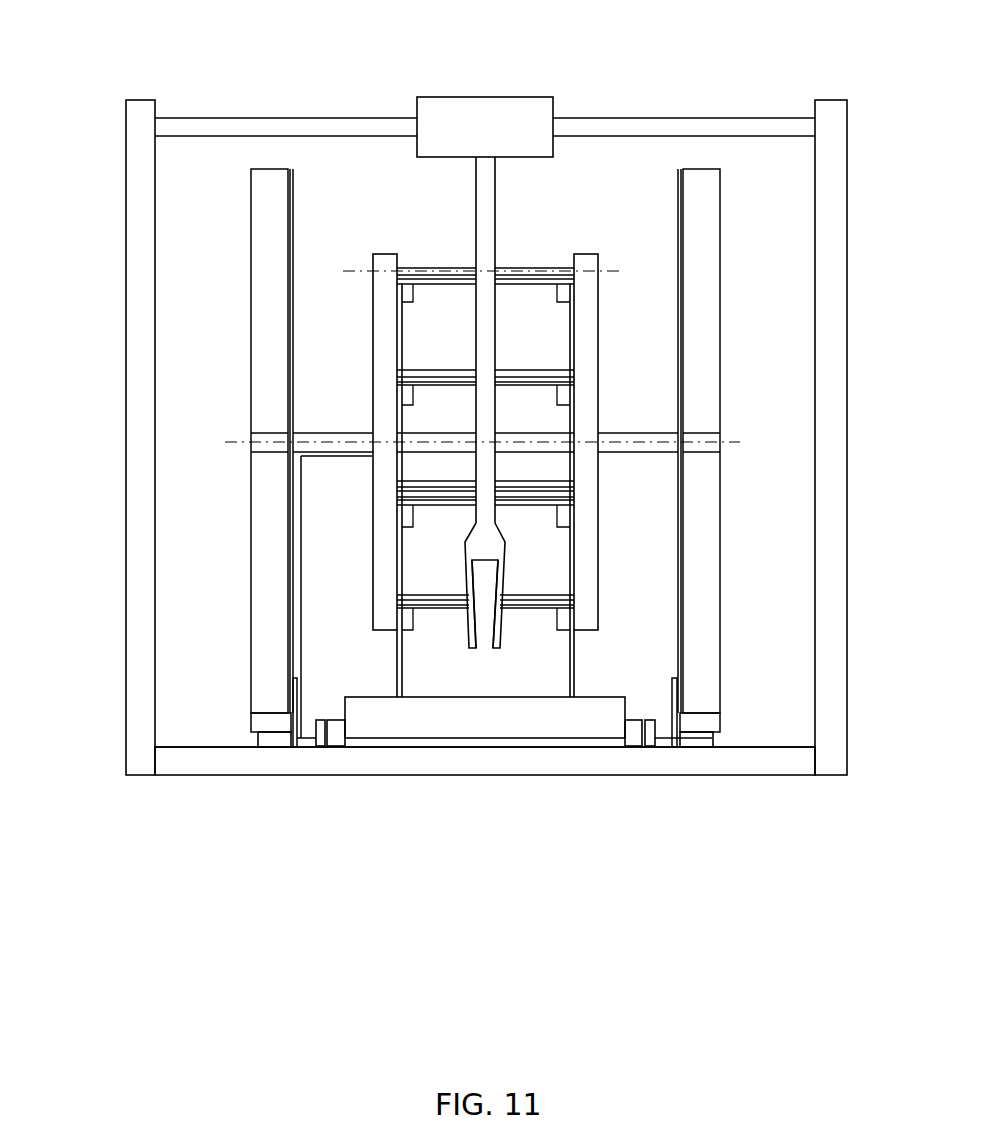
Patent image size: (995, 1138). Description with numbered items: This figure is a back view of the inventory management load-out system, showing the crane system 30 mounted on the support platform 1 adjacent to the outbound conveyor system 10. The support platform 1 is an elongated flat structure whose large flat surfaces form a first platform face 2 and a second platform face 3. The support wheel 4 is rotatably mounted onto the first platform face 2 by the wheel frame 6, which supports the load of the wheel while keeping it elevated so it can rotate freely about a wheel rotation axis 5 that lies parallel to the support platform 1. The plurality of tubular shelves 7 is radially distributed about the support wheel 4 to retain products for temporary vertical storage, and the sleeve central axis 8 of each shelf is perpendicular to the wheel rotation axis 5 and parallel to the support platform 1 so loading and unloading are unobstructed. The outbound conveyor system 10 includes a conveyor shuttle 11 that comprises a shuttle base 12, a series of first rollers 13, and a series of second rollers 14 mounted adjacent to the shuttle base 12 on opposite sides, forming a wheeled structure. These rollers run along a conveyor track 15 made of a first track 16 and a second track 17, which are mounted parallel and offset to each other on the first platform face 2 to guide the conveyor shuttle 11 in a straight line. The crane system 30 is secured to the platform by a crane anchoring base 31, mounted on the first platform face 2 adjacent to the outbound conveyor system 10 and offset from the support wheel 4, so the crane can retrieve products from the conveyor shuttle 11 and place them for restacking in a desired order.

The support platform 1 is at (448, 475).
The first platform face 2 is at (222, 738).
The second platform face 3 is at (222, 785).
The support wheel 4 is at (378, 345).
The wheel rotation axis 5 is at (735, 440).
The wheel frame 6 is at (263, 208).
The plurality of tubular shelves 7 is at (530, 378).
The sleeve central axis 8 is at (607, 270).
The outbound conveyor system 10 is at (645, 680).
The conveyor shuttle 11 is at (484, 617).
The shuttle base 12 is at (420, 712).
The series of first rollers 13 is at (337, 743).
The series of second rollers 14 is at (632, 743).
The conveyor track 15 is at (485, 770).
The first track 16 is at (327, 756).
The second track 17 is at (643, 756).
The crane system 30 is at (487, 70).
The crane anchoring base 31 is at (130, 483).